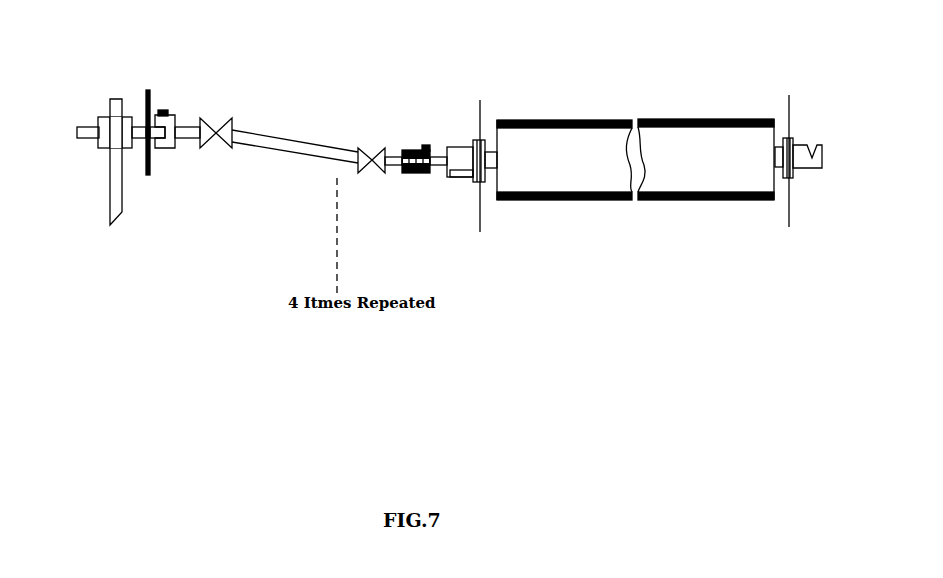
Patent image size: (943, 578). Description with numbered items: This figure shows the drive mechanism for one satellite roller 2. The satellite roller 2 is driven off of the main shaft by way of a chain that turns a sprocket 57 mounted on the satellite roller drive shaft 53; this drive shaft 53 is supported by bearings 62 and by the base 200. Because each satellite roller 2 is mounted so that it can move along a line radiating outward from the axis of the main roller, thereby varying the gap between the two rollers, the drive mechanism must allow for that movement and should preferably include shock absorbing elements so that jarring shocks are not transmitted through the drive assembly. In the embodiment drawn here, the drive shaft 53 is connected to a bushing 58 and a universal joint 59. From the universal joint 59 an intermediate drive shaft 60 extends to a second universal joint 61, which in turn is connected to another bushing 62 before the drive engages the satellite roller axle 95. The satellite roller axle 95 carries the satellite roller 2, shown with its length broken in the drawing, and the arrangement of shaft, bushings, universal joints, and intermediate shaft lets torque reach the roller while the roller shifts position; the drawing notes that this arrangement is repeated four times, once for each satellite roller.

The satellite roller 2 is at (635, 135).
The drive shaft 53 is at (58, 159).
The sprocket 57 is at (168, 107).
The bushing 58 is at (198, 103).
The universal joint 59 is at (201, 159).
The intermediate drive shaft 60 is at (295, 130).
The second universal joint 61 is at (354, 144).
The bearing 62 is at (250, 117).
The satellite roller axle 95 is at (812, 150).
The base 200 is at (77, 180).